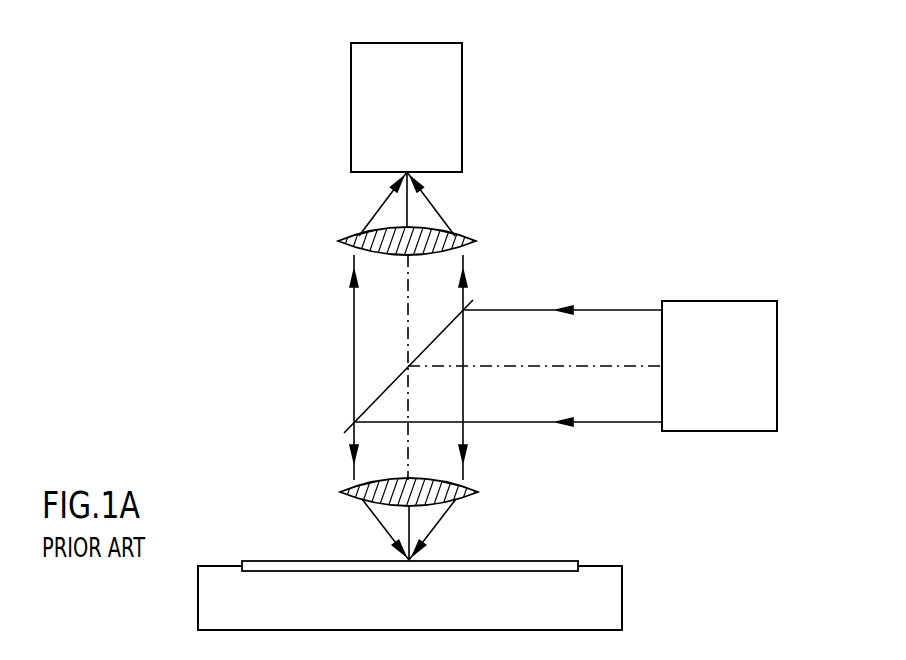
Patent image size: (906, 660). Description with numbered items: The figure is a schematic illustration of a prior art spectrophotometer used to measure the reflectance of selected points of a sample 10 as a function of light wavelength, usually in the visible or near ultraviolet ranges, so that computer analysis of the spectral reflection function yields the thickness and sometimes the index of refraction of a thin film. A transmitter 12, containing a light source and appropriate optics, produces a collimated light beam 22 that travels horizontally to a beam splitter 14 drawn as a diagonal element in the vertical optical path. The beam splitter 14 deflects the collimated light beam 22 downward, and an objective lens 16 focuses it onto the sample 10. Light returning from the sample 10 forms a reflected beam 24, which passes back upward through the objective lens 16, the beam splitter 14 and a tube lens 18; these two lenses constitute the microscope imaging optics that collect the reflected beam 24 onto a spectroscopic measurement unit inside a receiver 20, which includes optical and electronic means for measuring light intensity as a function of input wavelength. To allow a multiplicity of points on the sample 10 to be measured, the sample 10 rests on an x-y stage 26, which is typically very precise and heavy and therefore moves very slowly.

The sample 10 is at (535, 562).
The transmitter 12 is at (725, 313).
The beam splitter 14 is at (378, 395).
The objective lens 16 is at (342, 493).
The tube lens 18 is at (468, 232).
The receiver 20 is at (455, 139).
The collimated light beam 22 is at (595, 308).
The reflected beam 24 is at (354, 322).
The x-y stage 26 is at (607, 605).